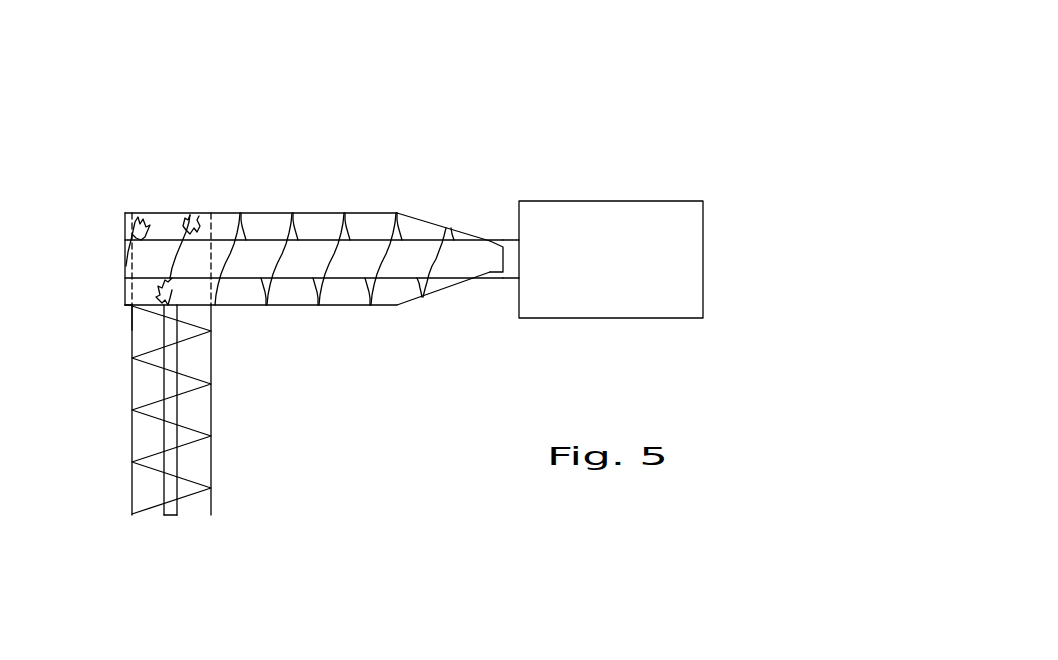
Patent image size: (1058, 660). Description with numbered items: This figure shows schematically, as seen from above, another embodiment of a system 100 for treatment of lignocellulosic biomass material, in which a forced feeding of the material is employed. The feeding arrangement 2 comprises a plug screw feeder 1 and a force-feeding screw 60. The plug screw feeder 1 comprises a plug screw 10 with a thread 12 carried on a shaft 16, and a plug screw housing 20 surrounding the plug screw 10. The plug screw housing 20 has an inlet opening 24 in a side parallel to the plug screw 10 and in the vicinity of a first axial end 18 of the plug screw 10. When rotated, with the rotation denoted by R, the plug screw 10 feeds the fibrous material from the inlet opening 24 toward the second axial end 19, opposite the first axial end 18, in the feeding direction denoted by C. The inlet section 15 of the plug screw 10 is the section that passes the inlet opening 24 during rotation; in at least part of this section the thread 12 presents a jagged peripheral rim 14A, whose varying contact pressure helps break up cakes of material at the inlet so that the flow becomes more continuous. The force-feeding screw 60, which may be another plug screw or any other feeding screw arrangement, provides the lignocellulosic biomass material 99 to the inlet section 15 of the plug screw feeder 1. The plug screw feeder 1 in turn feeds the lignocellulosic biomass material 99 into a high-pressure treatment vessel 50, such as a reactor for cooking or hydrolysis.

The system for treatment of lignocellulosic biomass material 100 is at (381, 323).
The plug screw feeder 1 is at (281, 190).
The feeding arrangement 2 is at (314, 405).
The plug screw 10 is at (297, 258).
The thread 12 is at (341, 232).
The jagged peripheral rim 14A is at (133, 227).
The inlet section 15 is at (184, 185).
The shaft 16 is at (473, 250).
The first axial end 18 is at (131, 212).
The second axial end 19 is at (501, 247).
The plug screw housing 20 is at (397, 307).
The inlet opening 24 is at (140, 307).
The high-pressure treatment vessel 50 is at (652, 218).
The force-feeding screw 60 is at (190, 425).
The lignocellulosic biomass material 99 is at (168, 547).
The rotation R is at (362, 185).
The feeding direction C is at (283, 293).